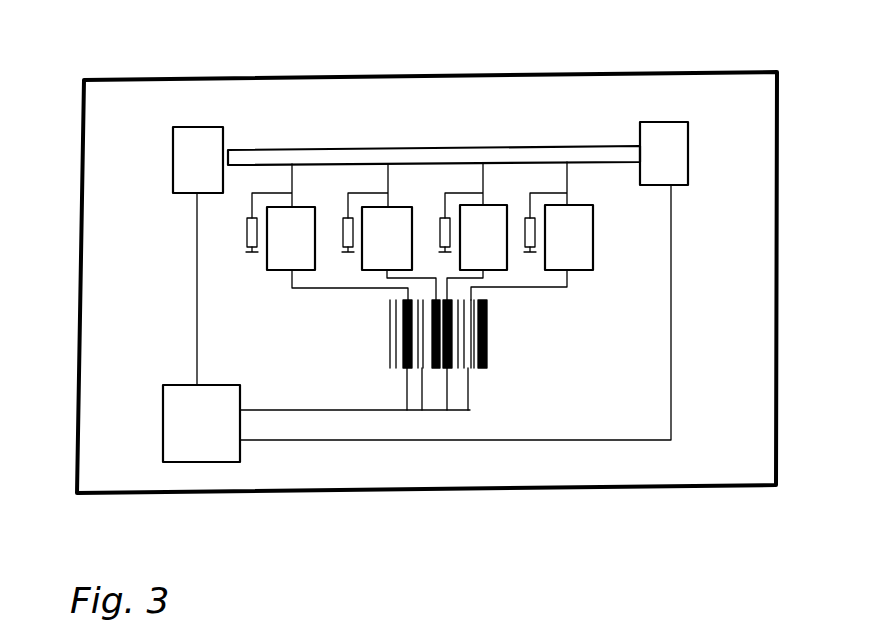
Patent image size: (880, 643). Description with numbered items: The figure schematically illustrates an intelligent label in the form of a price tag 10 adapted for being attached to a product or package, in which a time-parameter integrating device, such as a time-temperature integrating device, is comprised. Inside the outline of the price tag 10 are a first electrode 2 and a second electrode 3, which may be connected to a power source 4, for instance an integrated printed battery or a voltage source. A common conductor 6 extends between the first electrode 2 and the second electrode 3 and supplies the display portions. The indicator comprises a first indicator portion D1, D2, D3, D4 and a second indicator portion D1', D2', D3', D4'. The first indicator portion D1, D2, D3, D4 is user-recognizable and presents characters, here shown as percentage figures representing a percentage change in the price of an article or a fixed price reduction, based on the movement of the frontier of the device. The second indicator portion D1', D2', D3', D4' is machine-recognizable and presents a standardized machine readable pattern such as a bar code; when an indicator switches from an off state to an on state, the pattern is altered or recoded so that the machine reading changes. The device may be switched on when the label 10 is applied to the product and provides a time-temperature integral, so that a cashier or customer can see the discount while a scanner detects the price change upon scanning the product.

The price tag 10 is at (83, 117).
The first electrode 2 is at (192, 127).
The second electrode 3 is at (676, 122).
The power source 4 is at (215, 462).
The bus bar 6 is at (432, 148).
The first indicator portion D1 is at (214, 236).
The first indicator portion D2 is at (227, 264).
The first indicator portion D3 is at (638, 258).
The first indicator portion D4 is at (651, 231).
The second indicator portion D1' is at (371, 429).
The second indicator portion D2' is at (416, 429).
The second indicator portion D3' is at (520, 429).
The second indicator portion D4' is at (562, 429).